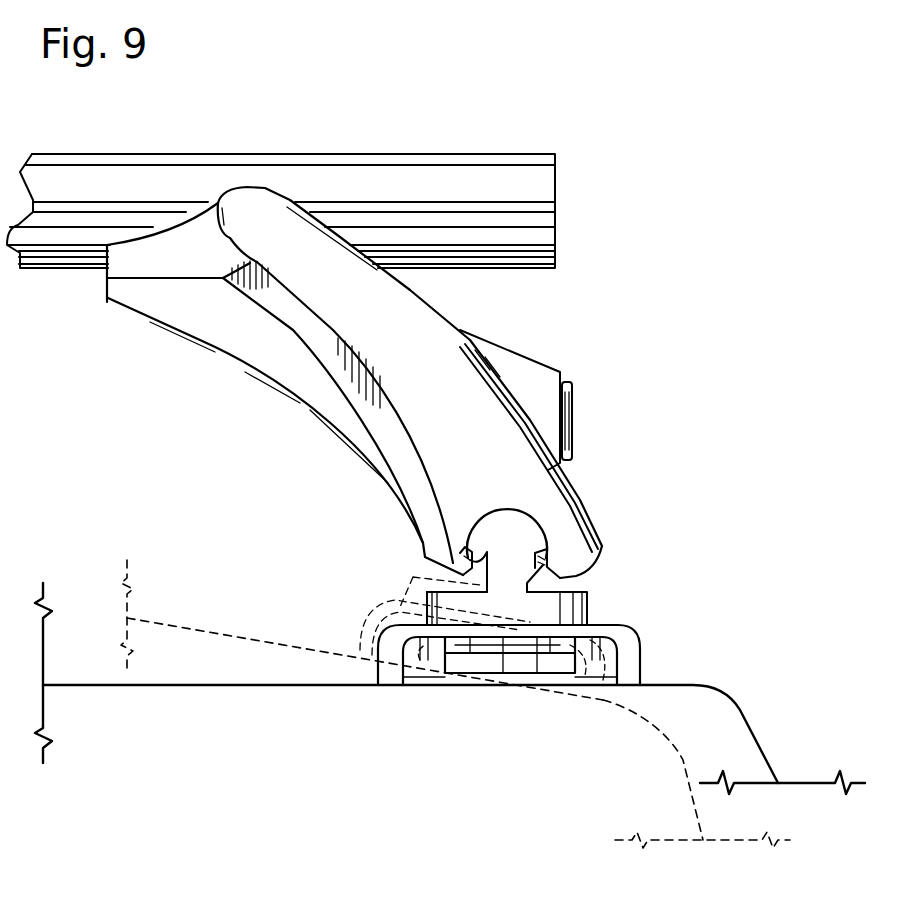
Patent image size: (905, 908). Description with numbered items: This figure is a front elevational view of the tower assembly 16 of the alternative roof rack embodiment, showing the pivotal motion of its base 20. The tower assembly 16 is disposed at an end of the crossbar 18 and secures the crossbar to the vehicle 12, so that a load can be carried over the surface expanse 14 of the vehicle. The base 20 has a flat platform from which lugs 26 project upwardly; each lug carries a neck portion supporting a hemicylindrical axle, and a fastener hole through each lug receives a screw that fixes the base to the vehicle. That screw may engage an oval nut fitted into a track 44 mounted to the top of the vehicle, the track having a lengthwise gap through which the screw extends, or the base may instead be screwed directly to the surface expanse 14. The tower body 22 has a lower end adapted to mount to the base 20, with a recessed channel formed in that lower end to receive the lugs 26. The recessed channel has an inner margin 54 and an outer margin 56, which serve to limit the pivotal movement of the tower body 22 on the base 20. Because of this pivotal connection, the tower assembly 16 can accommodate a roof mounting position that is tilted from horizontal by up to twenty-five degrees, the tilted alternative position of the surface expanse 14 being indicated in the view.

The vehicle 12 is at (790, 608).
The surface expanse 14 is at (250, 628).
The tower assembly 16 is at (625, 369).
The crossbar 18 is at (327, 154).
The base 20 is at (590, 608).
The tower body 22 is at (227, 360).
The lugs 26 is at (537, 522).
The track 44 is at (637, 659).
The inner margin 54 is at (468, 543).
The outer margin 56 is at (549, 549).